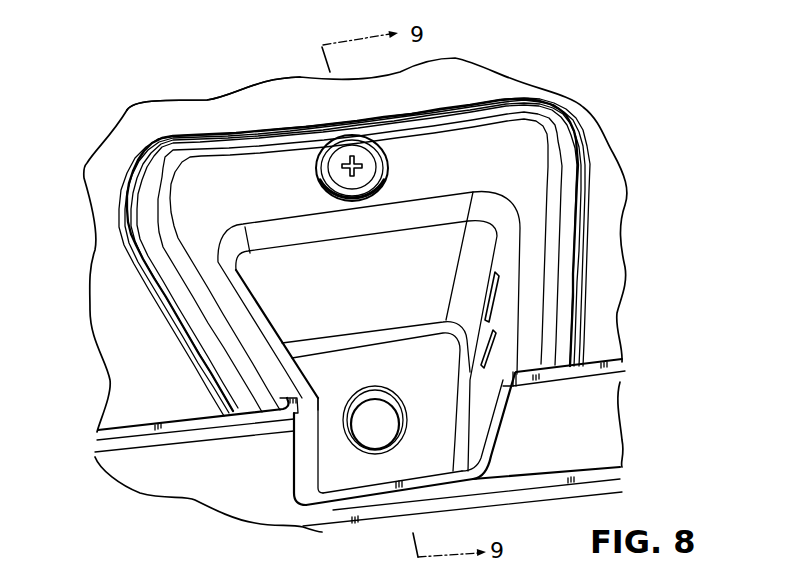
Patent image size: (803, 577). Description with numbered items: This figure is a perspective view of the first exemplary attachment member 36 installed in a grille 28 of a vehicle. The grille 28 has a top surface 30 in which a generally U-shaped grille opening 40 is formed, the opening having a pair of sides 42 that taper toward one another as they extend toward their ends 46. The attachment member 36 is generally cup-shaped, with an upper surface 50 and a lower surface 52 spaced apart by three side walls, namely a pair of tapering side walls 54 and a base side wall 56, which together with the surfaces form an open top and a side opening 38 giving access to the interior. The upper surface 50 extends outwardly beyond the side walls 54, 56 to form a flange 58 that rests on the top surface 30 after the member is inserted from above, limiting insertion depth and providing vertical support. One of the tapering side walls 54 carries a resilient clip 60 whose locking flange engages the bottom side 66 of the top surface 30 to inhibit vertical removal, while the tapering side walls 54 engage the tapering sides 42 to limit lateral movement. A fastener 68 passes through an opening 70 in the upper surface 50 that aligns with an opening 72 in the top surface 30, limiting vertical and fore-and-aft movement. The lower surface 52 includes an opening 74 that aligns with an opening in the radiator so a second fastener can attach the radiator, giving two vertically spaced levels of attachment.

The grille 28 is at (135, 128).
The top surface 30 is at (100, 172).
The attachment member 36 is at (545, 93).
The side opening 38 is at (378, 470).
The grille opening 40 is at (205, 297).
The sides 42 is at (287, 403).
The ends 46 is at (300, 412).
The upper surface 50 is at (533, 173).
The lower surface 52 is at (433, 462).
The tapering side walls 54 is at (305, 443).
The base side wall 56 is at (430, 248).
The flange 58 is at (549, 362).
The resilient clip 60 is at (500, 310).
The bottom side 66 is at (265, 447).
The fastener 68 is at (413, 168).
The opening 70 is at (399, 167).
The opening 72 is at (390, 155).
The opening 74 is at (368, 428).